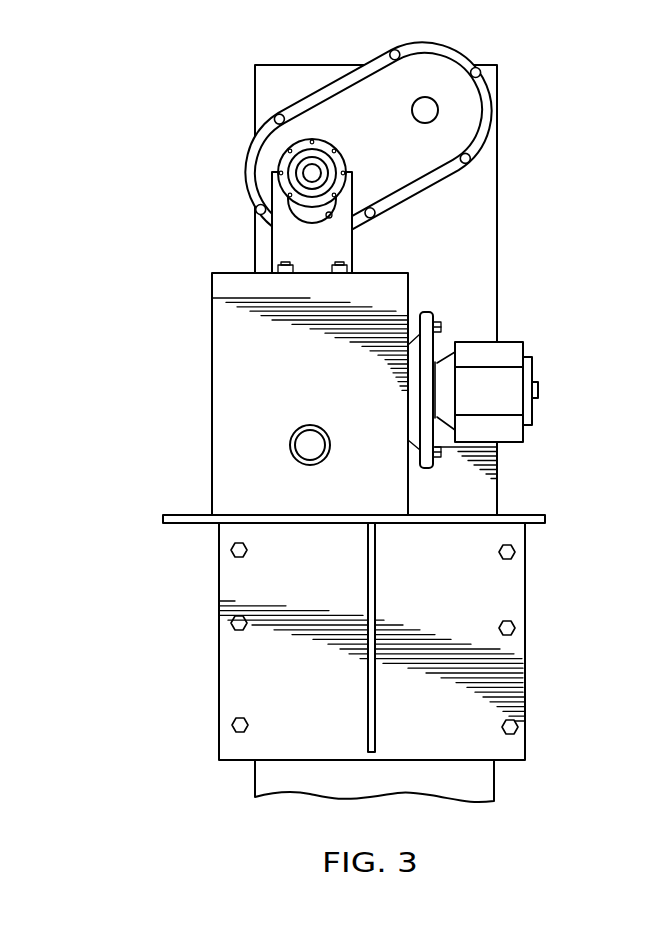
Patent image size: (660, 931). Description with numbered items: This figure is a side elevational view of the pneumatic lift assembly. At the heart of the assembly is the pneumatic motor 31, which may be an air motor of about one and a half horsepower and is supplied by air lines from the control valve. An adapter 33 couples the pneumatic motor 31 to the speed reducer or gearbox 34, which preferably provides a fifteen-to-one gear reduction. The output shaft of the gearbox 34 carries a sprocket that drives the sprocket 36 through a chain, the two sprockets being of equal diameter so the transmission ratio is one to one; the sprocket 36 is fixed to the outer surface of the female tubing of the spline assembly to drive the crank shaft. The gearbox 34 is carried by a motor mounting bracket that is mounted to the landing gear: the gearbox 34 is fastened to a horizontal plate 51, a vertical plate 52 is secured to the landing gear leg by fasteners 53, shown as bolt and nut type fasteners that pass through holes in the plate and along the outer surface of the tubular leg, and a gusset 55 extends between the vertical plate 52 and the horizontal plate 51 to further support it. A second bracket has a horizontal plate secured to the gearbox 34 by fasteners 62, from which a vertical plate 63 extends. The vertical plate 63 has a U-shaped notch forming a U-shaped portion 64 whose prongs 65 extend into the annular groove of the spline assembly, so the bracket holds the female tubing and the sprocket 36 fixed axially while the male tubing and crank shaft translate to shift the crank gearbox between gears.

The pneumatic motor 31 is at (512, 337).
The adapter 33 is at (432, 310).
The gearbox 34 is at (276, 391).
The sprocket 36 is at (278, 162).
The horizontal plate 51 is at (530, 514).
The vertical plate 52 is at (517, 598).
The fasteners 53 is at (232, 622).
The gusset 55 is at (376, 712).
The fasteners 62 is at (287, 262).
The vertical plate 63 is at (298, 238).
The U-shaped portion 64 is at (332, 215).
The prongs 65 is at (278, 187).